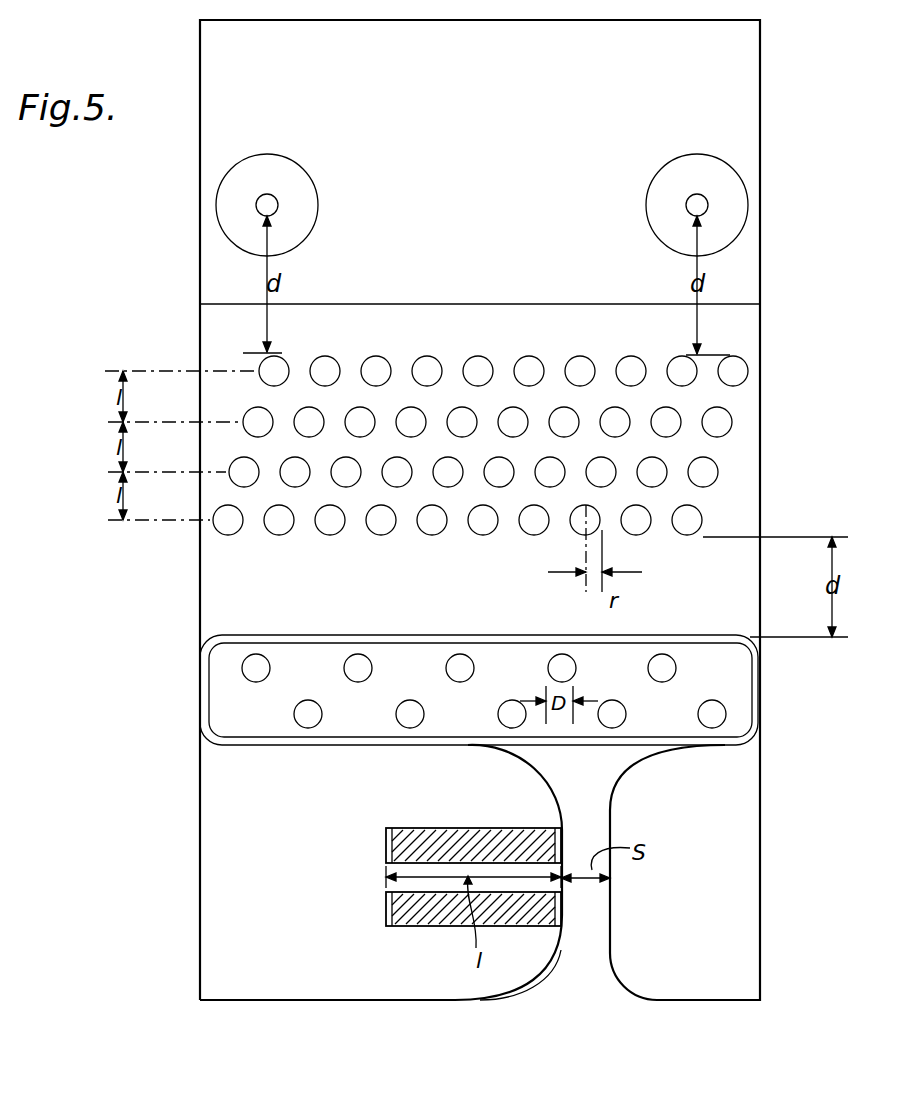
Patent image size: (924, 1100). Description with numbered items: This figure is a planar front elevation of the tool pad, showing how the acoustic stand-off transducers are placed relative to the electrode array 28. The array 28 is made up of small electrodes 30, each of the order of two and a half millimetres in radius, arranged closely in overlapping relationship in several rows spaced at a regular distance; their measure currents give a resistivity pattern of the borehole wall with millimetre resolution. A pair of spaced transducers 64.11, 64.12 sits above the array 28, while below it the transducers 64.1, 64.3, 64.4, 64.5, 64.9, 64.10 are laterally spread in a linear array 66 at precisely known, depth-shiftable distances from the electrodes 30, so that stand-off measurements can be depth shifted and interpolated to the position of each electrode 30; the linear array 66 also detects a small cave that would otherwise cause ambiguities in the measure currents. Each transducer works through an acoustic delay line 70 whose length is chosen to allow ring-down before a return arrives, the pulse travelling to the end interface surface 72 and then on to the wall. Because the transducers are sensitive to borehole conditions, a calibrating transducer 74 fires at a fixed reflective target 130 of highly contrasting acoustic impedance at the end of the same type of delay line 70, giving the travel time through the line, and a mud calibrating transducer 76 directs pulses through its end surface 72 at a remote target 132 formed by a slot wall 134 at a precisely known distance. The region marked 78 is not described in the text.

The electrode array 28 is at (250, 352).
The electrodes 30 is at (733, 430).
The acoustic stand-off transducer 64.1 is at (246, 672).
The acoustic stand-off transducer 64.3 is at (360, 654).
The acoustic stand-off transducer 64.4 is at (414, 728).
The acoustic stand-off transducer 64.5 is at (462, 654).
The acoustic stand-off transducer 64.9 is at (668, 655).
The acoustic stand-off transducer 64.10 is at (727, 726).
The acoustic stand-off transducer 64.11 is at (255, 205).
The acoustic stand-off transducer 64.12 is at (708, 208).
The linear array of acoustic transducers 66 is at (288, 680).
The acoustic delay line 70 is at (455, 830).
The end interface surface 72 is at (563, 913).
The calibrating transducer 74 is at (384, 845).
The mud calibrating transducer 76 is at (384, 908).
The recess / cutout 78 is at (561, 988).
The fixed reflective target 130 is at (563, 845).
The remote target 132 is at (609, 895).
The slot wall 134 is at (616, 942).